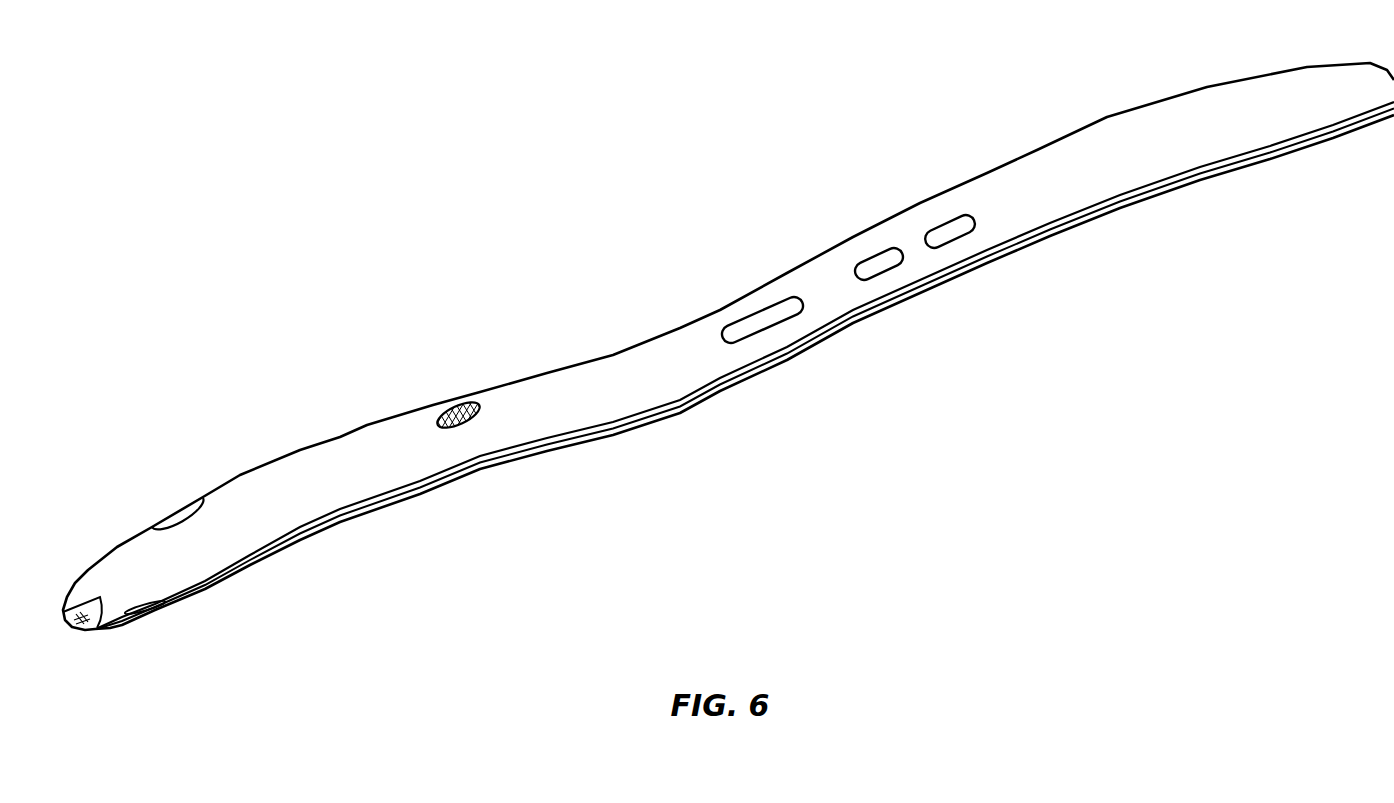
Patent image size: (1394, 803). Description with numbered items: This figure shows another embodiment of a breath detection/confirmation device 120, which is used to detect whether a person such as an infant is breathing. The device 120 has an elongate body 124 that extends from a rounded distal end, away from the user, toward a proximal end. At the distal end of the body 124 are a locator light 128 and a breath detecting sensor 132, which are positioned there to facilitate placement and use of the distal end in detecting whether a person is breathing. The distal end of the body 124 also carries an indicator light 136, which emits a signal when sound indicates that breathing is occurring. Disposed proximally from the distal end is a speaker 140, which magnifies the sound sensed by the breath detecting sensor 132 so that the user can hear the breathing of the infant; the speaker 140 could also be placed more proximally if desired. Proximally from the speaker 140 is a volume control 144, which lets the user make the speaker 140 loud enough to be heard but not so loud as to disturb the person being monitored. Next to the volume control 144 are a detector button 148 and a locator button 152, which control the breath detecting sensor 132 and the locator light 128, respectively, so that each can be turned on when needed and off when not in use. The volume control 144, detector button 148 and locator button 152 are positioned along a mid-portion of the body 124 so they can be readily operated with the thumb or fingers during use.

The breath detection/confirmation device 120 is at (572, 298).
The elongate body 124 is at (613, 428).
The locator light 128 is at (73, 630).
The breath detecting sensor 132 is at (147, 610).
The indicator light 136 is at (173, 513).
The speaker 140 is at (458, 405).
The volume control 144 is at (768, 317).
The detector button 148 is at (880, 263).
The locator button 152 is at (948, 232).